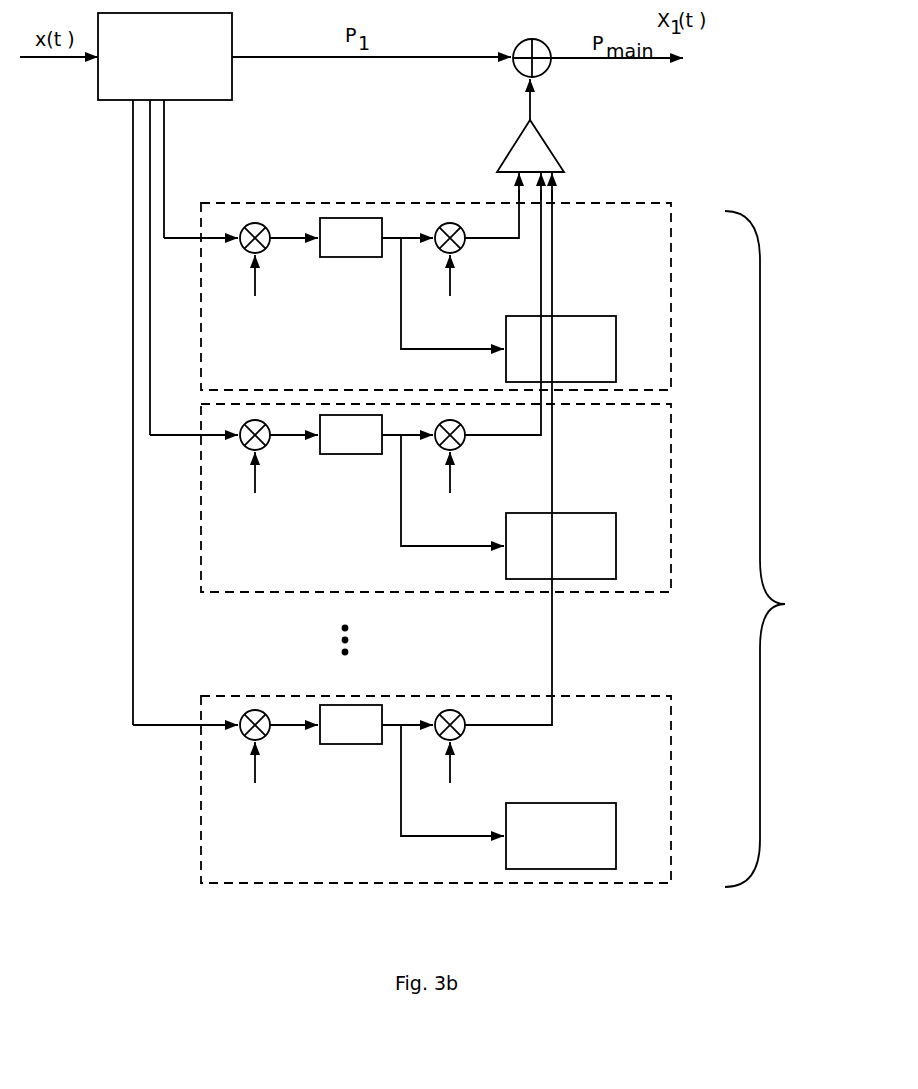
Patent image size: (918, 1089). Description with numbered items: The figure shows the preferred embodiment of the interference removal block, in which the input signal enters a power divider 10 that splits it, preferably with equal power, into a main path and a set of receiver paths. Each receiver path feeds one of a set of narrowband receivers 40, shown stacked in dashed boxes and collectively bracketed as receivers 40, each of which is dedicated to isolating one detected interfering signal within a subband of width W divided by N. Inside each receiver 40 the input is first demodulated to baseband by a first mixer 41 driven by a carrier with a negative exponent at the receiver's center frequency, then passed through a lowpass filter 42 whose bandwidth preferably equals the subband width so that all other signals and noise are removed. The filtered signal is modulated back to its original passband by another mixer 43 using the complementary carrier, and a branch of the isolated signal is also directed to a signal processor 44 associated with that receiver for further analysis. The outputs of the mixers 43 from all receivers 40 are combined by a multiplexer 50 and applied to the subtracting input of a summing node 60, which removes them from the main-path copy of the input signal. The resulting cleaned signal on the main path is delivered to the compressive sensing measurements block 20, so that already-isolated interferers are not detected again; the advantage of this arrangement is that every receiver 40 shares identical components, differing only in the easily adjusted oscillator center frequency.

The power divider 10 is at (165, 56).
The compressive sensing measurements block 20 is at (712, 58).
The narrowband receiver 40 is at (478, 538).
The first mixer 41 is at (244, 495).
The lowpass filter 42 is at (351, 481).
The mixer 43 is at (464, 495).
The signal processor 44 is at (561, 592).
The multiplexer 50 is at (543, 125).
The summing node 60 is at (538, 63).